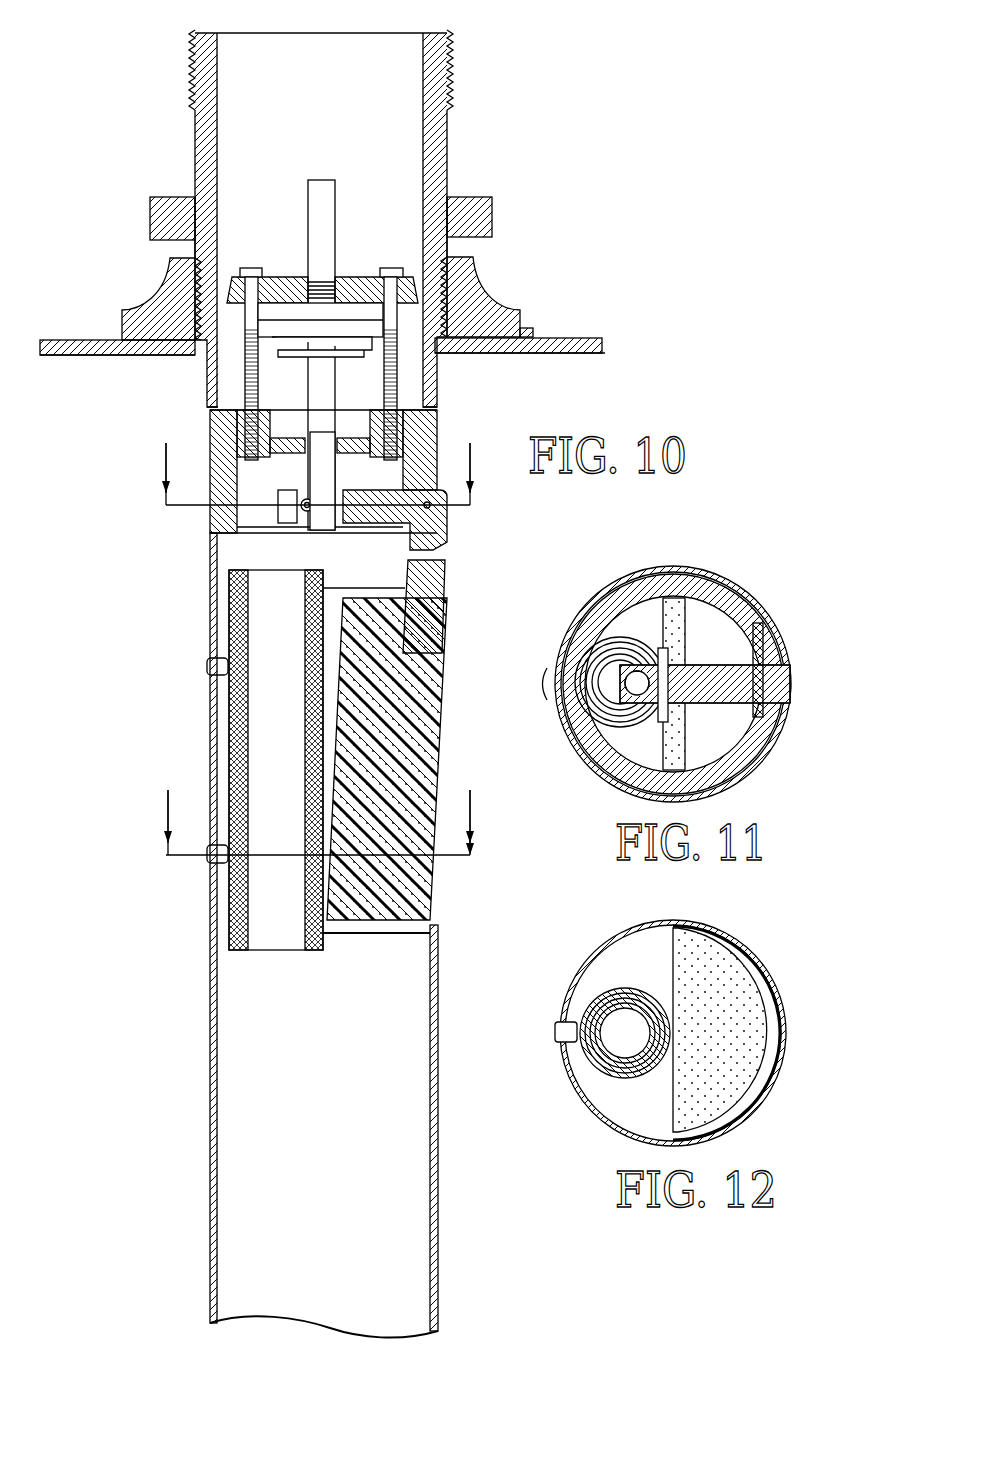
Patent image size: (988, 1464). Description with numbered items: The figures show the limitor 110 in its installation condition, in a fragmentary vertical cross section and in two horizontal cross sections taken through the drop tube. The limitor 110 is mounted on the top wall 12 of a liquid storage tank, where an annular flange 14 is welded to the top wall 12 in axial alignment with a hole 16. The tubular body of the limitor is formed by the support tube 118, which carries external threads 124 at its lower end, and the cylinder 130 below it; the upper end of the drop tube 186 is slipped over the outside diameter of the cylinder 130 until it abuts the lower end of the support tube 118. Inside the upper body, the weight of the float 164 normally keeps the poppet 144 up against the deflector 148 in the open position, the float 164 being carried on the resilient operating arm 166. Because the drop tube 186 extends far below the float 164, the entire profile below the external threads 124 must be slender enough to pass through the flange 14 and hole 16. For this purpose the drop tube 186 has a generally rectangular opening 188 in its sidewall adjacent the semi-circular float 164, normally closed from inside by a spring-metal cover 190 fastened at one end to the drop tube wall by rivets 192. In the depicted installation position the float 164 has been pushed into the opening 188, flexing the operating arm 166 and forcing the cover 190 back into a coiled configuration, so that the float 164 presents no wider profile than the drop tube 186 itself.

In FIG. 10, the limitor 110 is at (502, 48).
In FIG. 11, the limitor 110 is at (755, 578).
In FIG. 12, the limitor 110 is at (758, 924).
In FIG. 10, the support tube 118 is at (449, 175).
In FIG. 10, the deflector 148 is at (276, 277).
In FIG. 10, the poppet 144 is at (356, 318).
In FIG. 10, the external threads 124 is at (475, 266).
In FIG. 10, the annular flange 14 is at (488, 300).
In FIG. 10, the top wall 12 is at (587, 337).
In FIG. 10, the hole 16 is at (462, 347).
In FIG. 10, the cylinder 130 is at (440, 435).
In FIG. 11, the cylinder 130 is at (566, 652).
In FIG. 10, the operating arm 166 is at (452, 550).
In FIG. 11, the operating arm 166 is at (722, 712).
In FIG. 10, the float 164 is at (440, 702).
In FIG. 11, the float 164 is at (778, 708).
In FIG. 12, the float 164 is at (772, 1048).
In FIG. 10, the cover 190 is at (262, 712).
In FIG. 11, the cover 190 is at (614, 736).
In FIG. 12, the cover 190 is at (627, 1084).
In FIG. 10, the rivets 192 is at (208, 667).
In FIG. 12, the rivets 192 is at (554, 1026).
In FIG. 10, the drop tube 186 is at (440, 1115).
In FIG. 11, the drop tube 186 is at (581, 600).
In FIG. 12, the drop tube 186 is at (591, 947).
In FIG. 10, the opening 188 is at (435, 932).
In FIG. 12, the opening 188 is at (752, 1118).